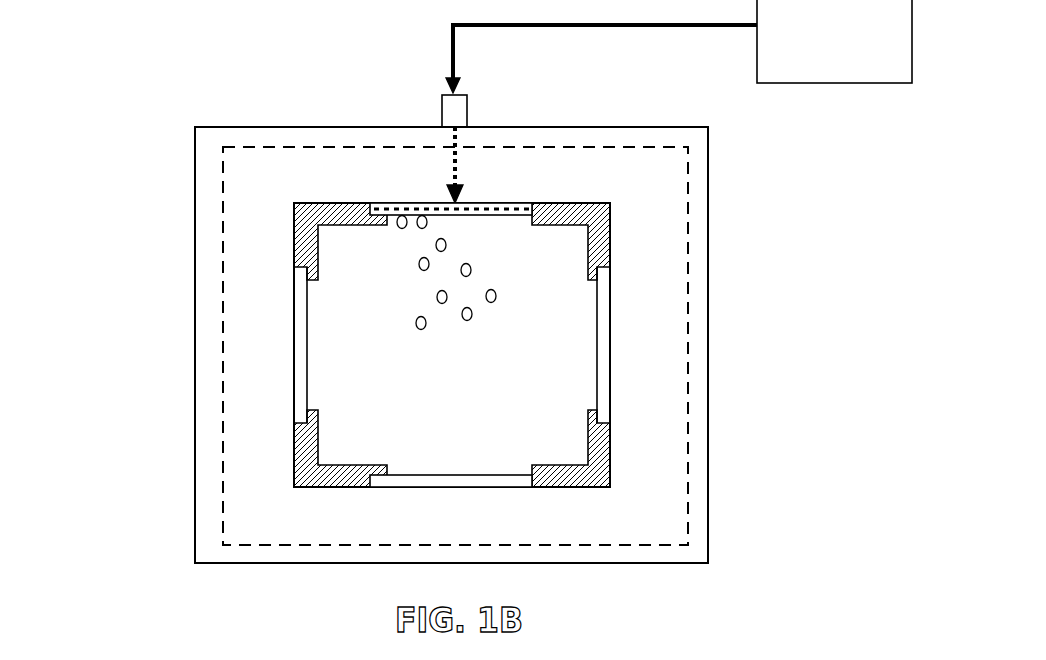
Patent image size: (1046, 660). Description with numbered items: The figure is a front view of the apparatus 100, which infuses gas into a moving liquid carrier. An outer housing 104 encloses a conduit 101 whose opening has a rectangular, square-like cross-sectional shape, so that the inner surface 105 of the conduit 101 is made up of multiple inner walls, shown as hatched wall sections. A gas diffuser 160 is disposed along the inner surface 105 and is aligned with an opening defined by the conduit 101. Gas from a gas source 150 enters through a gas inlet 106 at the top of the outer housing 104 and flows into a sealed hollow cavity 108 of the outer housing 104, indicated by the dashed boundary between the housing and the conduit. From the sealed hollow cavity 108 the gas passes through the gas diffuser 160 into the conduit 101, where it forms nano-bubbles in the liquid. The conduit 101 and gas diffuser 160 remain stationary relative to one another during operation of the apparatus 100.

The apparatus 100 is at (210, 80).
The conduit 101 is at (135, 275).
The outer housing 104 is at (718, 405).
The inner surface 105 is at (295, 235).
The gas inlet 106 is at (442, 110).
The sealed hollow cavity 108 is at (510, 180).
The gas source 150 is at (812, 34).
The gas diffuser 160 is at (440, 215).